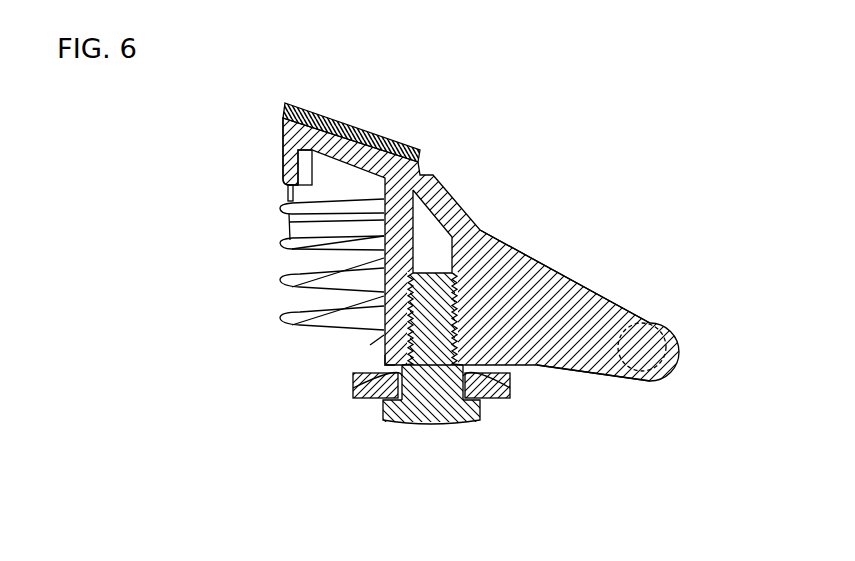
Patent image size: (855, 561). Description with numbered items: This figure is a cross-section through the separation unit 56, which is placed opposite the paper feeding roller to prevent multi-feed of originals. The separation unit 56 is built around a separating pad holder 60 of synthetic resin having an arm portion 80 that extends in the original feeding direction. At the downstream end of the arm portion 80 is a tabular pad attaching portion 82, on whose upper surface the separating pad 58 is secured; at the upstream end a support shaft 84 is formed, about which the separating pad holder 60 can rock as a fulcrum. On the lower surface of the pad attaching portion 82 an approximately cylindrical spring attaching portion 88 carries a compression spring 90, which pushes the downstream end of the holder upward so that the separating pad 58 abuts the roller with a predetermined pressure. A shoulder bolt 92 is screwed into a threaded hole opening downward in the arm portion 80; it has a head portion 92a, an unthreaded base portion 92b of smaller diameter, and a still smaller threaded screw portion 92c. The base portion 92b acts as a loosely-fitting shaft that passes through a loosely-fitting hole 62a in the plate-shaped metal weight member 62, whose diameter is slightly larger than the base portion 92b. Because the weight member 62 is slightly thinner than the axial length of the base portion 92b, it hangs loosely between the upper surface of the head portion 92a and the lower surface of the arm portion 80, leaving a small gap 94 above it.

The separation unit 56 is at (238, 58).
The separating pad 58 is at (380, 137).
The separating pad holder 60 is at (492, 208).
The weight member 62 is at (353, 380).
The loosely-fitting hole 62a is at (510, 390).
The arm portion 80 is at (547, 297).
The pad attaching portion 82 is at (283, 137).
The support shaft 84 is at (667, 322).
The spring attaching portion 88 is at (287, 195).
The compression spring 90 is at (276, 278).
The shoulder bolt 92 is at (485, 432).
The head portion 92a is at (423, 412).
The base portion 92b is at (400, 374).
The screw portion 92c is at (423, 274).
The gap 94 is at (374, 369).